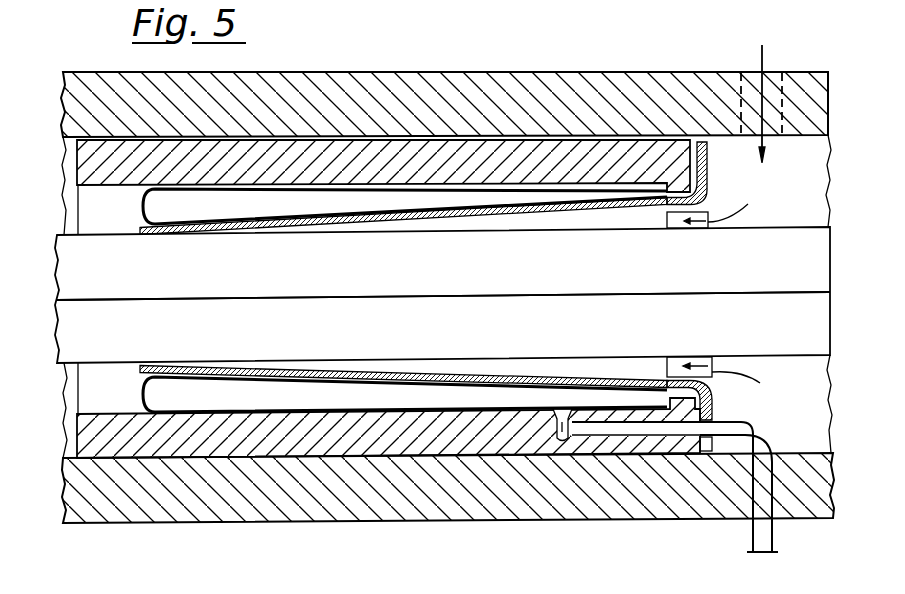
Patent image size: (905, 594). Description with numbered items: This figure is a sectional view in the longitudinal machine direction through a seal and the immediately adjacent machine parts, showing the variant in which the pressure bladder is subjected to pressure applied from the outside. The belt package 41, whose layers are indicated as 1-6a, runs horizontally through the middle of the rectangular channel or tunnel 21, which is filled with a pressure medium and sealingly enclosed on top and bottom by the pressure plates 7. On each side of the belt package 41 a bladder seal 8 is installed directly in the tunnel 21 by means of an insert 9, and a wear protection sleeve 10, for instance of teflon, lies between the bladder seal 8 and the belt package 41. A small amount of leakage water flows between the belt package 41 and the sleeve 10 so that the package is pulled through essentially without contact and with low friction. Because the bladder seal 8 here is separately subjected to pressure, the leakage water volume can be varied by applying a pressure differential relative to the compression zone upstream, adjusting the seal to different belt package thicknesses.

The pressure plate 7 is at (80, 100).
The insert 9 is at (92, 170).
The bladder seal 8 is at (143, 205).
The wear protection sleeve 10 is at (291, 231).
The belt package 41 is at (55, 238).
The layer stack 1-6a is at (217, 317).
The tunnel 21 is at (733, 157).